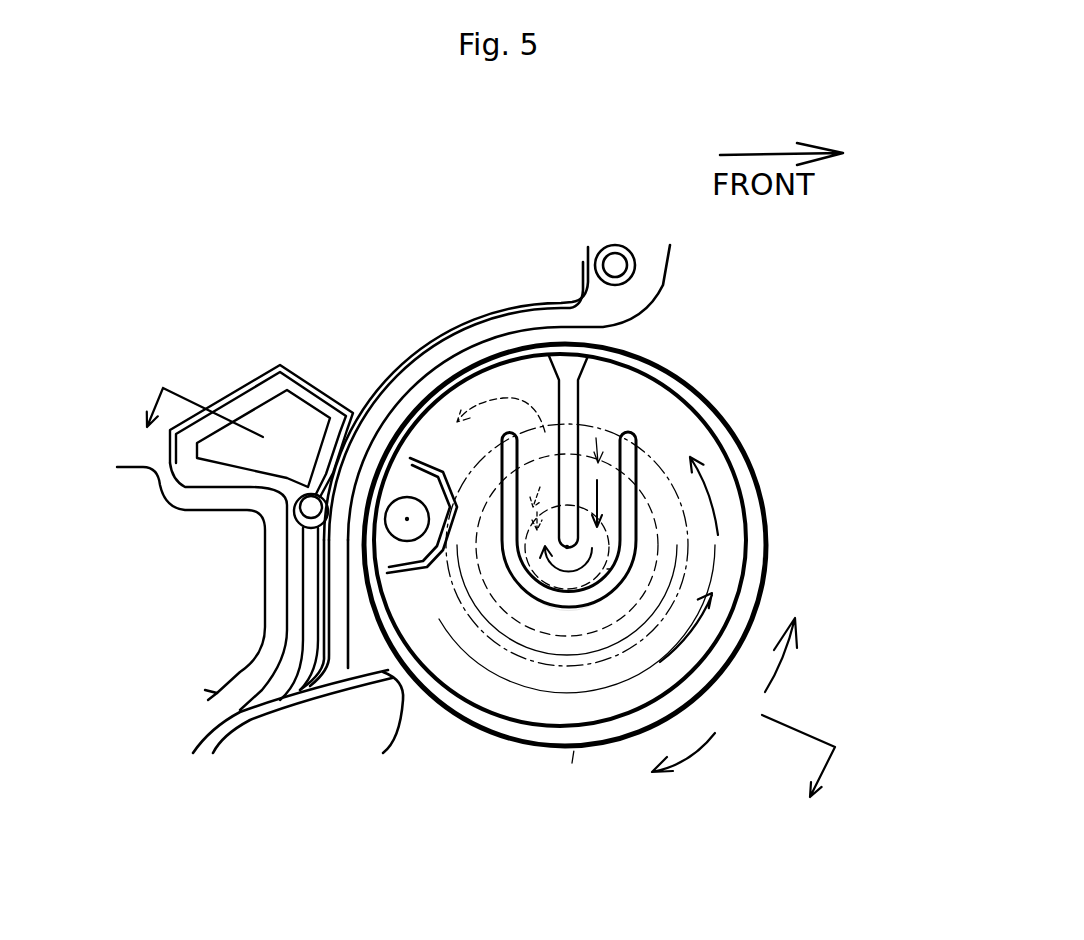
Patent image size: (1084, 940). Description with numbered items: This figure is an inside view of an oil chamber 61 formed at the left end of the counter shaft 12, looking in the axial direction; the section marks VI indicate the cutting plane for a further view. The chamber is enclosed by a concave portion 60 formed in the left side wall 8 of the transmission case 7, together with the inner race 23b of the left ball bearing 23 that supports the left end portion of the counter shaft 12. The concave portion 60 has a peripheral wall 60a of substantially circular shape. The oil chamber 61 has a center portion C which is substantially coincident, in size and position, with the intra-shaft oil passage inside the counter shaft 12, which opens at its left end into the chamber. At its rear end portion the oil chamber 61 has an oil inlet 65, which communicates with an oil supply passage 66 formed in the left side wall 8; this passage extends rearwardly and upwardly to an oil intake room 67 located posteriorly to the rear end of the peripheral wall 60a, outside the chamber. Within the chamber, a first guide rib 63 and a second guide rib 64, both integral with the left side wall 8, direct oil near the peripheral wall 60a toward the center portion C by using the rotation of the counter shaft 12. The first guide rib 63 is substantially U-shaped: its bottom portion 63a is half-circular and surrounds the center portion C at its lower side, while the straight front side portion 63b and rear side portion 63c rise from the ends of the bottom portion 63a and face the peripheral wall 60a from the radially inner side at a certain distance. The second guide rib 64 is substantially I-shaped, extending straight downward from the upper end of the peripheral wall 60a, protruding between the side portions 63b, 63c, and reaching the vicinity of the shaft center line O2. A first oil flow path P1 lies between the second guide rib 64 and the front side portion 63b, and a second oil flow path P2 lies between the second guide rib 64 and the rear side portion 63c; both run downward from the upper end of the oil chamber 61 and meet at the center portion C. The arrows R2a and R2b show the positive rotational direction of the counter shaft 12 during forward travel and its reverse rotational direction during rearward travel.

The transmission case 7 is at (465, 288).
The left side wall 8 is at (742, 297).
The counter shaft 12 is at (567, 548).
The inner race 23b is at (590, 655).
The left ball bearing 23 is at (573, 756).
The concave portion 60 is at (642, 384).
The peripheral wall 60a is at (722, 423).
The oil chamber 61 is at (498, 695).
The first guide rib 63 is at (618, 613).
The bottom portion 63a is at (563, 598).
The front side portion 63b is at (596, 438).
The rear side portion 63c is at (497, 465).
The second guide rib 64 is at (565, 408).
The oil inlet 65 is at (406, 518).
The oil supply passage 66 is at (393, 527).
The oil intake room 67 is at (277, 423).
The first oil flow path P1 is at (608, 502).
The second oil flow path P2 is at (509, 523).
The shaft center line O2 is at (548, 560).
The center portion C is at (607, 569).
The positive rotational direction of the counter shaft R2a is at (807, 656).
The reverse rotational direction of the counter shaft R2b is at (689, 772).
The section VI is at (507, 576).